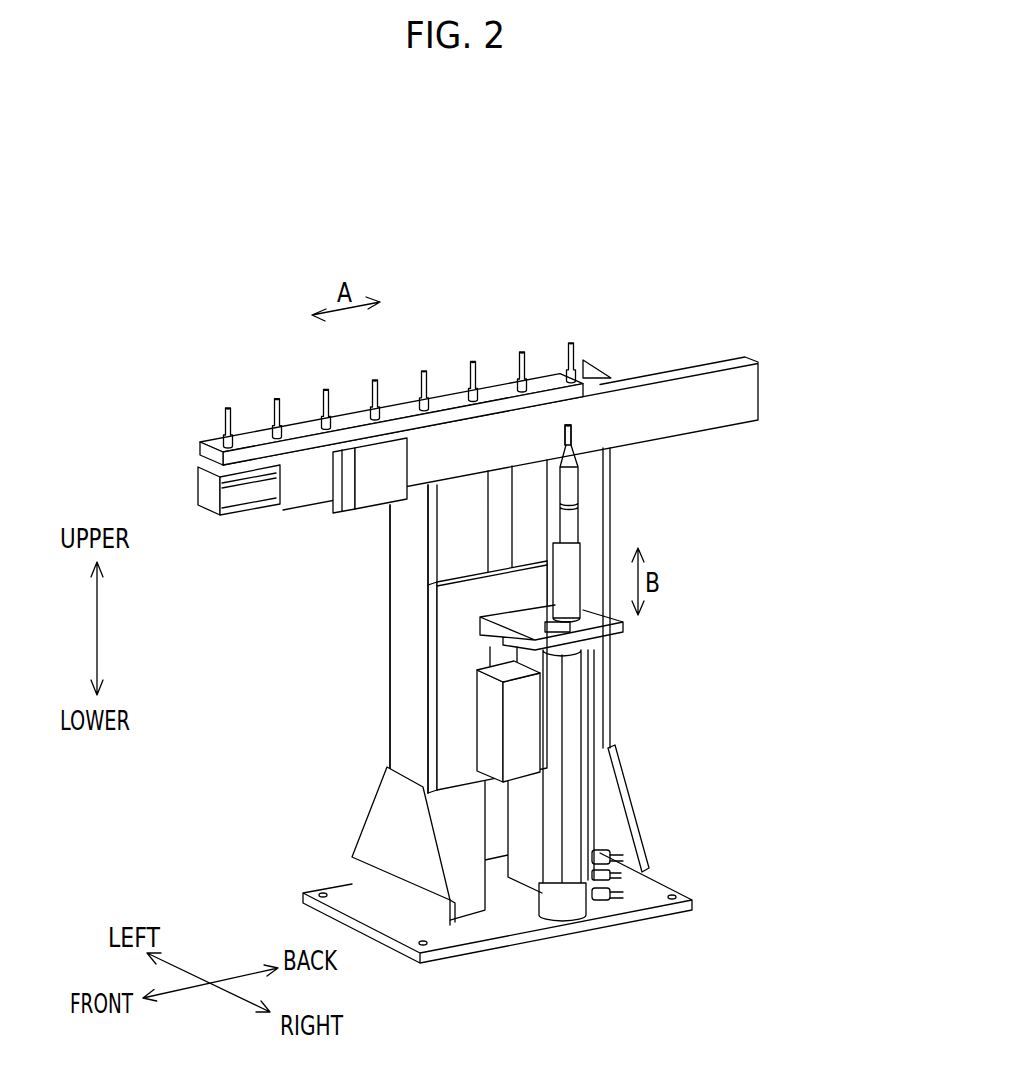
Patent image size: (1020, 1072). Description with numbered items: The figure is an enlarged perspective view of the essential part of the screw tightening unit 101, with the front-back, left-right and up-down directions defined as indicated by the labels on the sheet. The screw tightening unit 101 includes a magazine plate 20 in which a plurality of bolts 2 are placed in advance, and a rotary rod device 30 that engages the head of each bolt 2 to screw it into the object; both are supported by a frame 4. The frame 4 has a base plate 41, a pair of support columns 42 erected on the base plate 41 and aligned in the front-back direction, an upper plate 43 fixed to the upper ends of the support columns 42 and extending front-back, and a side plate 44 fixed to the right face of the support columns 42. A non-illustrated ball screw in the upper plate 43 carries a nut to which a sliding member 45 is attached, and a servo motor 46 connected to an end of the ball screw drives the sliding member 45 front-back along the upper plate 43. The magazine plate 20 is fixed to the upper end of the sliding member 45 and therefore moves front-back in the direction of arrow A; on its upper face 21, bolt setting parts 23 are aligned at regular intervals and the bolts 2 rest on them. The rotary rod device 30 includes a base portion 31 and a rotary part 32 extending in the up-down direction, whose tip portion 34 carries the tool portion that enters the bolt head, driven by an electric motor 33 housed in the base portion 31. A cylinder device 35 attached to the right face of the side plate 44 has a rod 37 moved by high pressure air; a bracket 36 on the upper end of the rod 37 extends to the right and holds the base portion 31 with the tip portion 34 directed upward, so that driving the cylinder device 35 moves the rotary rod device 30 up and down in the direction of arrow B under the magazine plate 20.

The screw tightening unit 101 is at (748, 213).
The bolts 2 is at (571, 384).
The frame 4 is at (378, 599).
The magazine plate 20 is at (405, 363).
The upper face 21 is at (247, 440).
The bolt setting parts 23 is at (453, 402).
The rotary rod device 30 is at (600, 626).
The base portion 31 is at (629, 785).
The rotary part 32 is at (613, 476).
The electric motor 33 is at (582, 721).
The tip portion 34 is at (578, 426).
The cylinder device 35 is at (492, 692).
The bracket 36 is at (620, 629).
The rod 37 is at (498, 657).
The base plate 41 is at (650, 908).
The support columns 42 is at (595, 504).
The upper plate 43 is at (737, 400).
The side plate 44 is at (448, 734).
The sliding member 45 is at (370, 492).
The servo motor 46 is at (248, 493).